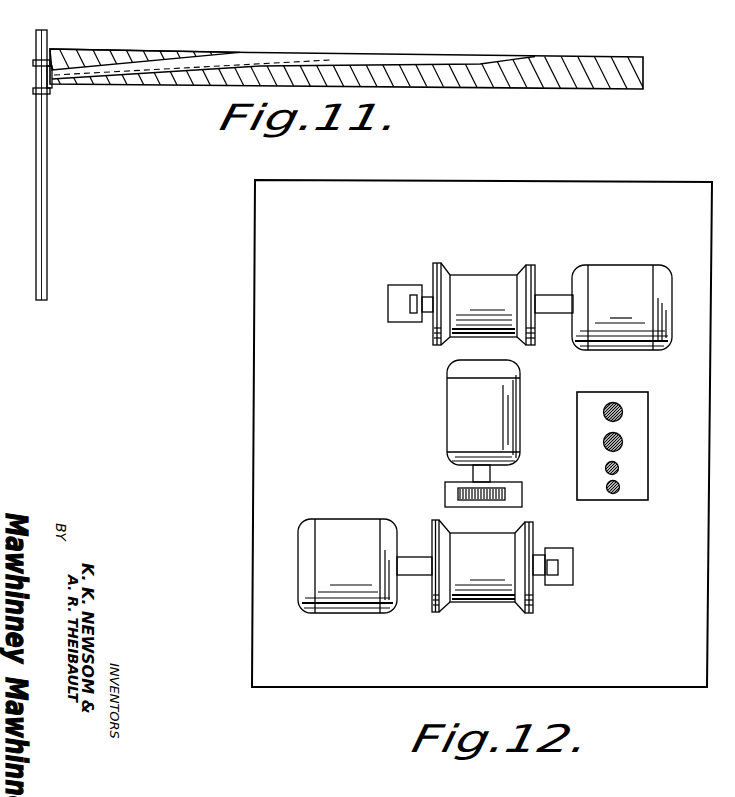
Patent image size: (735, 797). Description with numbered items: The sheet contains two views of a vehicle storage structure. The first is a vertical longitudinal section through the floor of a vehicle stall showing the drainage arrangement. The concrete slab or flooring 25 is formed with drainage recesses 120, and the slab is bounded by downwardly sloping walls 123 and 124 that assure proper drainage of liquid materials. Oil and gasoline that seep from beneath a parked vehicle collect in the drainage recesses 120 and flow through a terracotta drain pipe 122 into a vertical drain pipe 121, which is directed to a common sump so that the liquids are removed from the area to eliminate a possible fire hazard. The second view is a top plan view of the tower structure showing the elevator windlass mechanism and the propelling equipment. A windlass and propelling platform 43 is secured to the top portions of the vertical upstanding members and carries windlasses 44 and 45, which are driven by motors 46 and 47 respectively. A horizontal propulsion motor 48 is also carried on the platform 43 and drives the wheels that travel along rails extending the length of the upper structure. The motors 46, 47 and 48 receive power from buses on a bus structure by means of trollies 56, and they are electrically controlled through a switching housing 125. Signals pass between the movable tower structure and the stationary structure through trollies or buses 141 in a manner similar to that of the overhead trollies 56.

In FIG. 11, the drainage recesses 120 is at (237, 62).
In FIG. 11, the vertical drain pipe 121 is at (47, 153).
In FIG. 11, the terracotta drain pipe 122 is at (120, 75).
In FIG. 11, the downwardly sloping wall 123 is at (316, 64).
In FIG. 11, the downwardly sloping wall 124 is at (218, 35).
In FIG. 11, the concrete slab or flooring 25 is at (507, 78).
In FIG. 12, the windlass and propelling platform 43 is at (272, 333).
In FIG. 12, the windlass 44 is at (508, 590).
In FIG. 12, the windlass 45 is at (484, 285).
In FIG. 12, the motor 46 is at (630, 273).
In FIG. 12, the motor 47 is at (345, 528).
In FIG. 12, the horizontal propulsion motor 48 is at (463, 409).
In FIG. 12, the trollies 56 is at (623, 440).
In FIG. 12, the switching housing 125 is at (637, 463).
In FIG. 12, the trollies or buses 141 is at (608, 485).